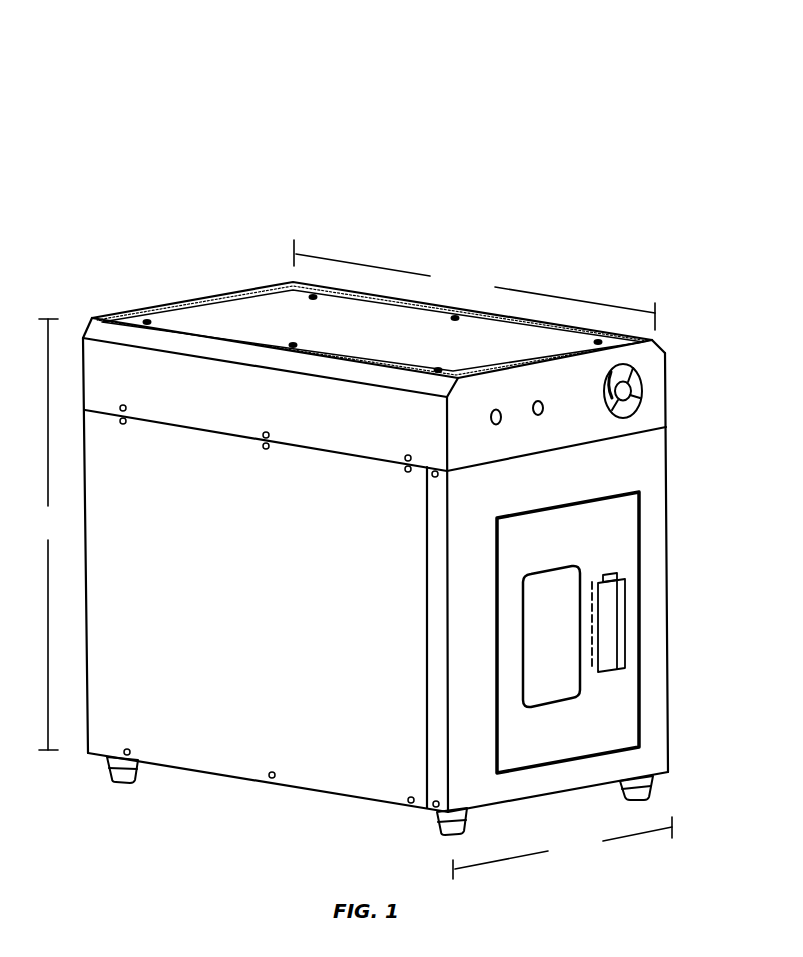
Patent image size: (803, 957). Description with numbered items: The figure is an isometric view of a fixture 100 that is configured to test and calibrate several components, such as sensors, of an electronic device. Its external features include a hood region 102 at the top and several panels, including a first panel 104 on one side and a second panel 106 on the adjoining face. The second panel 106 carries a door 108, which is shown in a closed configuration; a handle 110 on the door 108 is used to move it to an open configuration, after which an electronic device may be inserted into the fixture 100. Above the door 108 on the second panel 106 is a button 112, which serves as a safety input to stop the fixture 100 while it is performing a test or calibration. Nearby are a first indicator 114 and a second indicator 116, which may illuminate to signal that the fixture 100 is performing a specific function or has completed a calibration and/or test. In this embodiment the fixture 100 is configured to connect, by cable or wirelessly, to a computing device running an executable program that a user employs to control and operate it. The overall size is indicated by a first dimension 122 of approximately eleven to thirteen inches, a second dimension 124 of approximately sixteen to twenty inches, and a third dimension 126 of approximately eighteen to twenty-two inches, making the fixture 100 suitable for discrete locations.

The fixture 100 is at (150, 108).
The hood region 102 is at (200, 313).
The first panel 104 is at (267, 604).
The second panel 106 is at (582, 487).
The door 108 is at (602, 548).
The handle 110 is at (627, 589).
The button 112 is at (643, 378).
The first indicator 114 is at (502, 419).
The second indicator 116 is at (544, 410).
The first dimension 122 is at (562, 848).
The second dimension 124 is at (474, 285).
The third dimension 126 is at (54, 534).